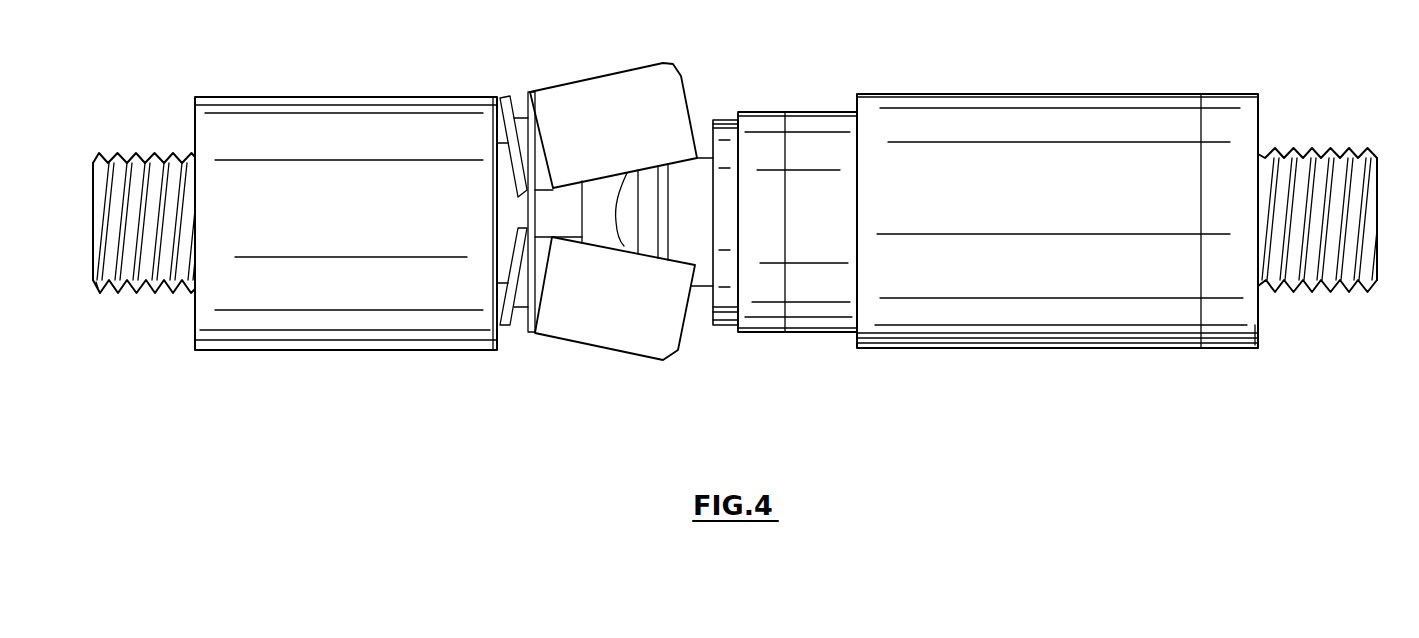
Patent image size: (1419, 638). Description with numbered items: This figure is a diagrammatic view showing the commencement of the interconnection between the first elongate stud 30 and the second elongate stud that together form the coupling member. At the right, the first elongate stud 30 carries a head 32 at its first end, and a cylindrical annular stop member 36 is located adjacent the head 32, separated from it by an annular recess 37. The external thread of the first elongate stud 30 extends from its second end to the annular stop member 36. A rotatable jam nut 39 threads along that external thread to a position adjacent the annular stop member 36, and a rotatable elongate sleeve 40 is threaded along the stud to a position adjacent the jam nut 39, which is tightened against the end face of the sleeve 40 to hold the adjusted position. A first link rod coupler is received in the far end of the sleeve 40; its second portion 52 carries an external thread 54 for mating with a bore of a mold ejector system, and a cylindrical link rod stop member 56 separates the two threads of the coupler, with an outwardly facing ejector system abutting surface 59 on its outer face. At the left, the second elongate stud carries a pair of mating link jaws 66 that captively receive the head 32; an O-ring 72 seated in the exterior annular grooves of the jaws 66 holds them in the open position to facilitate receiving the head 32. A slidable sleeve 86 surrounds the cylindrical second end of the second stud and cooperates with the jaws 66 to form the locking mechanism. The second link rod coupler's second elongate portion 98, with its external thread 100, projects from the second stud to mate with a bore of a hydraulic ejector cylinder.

The second elongate portion 98 is at (113, 160).
The external thread 100 is at (106, 294).
The slidable sleeve 86 is at (428, 113).
The O-ring 72 is at (528, 100).
The mating link jaws 66 is at (622, 83).
The head 32 is at (648, 238).
The annular recess 37 is at (703, 118).
The annular stop member 36 is at (772, 333).
The first elongate stud 30 is at (767, 112).
The jam nut 39 is at (827, 112).
The rotatable elongate sleeve 40 is at (1095, 108).
The link rod stop member 56 is at (1233, 105).
The ejector system abutting surface 59 is at (1258, 334).
The second portion 52 is at (1357, 155).
The external thread 54 is at (1303, 150).